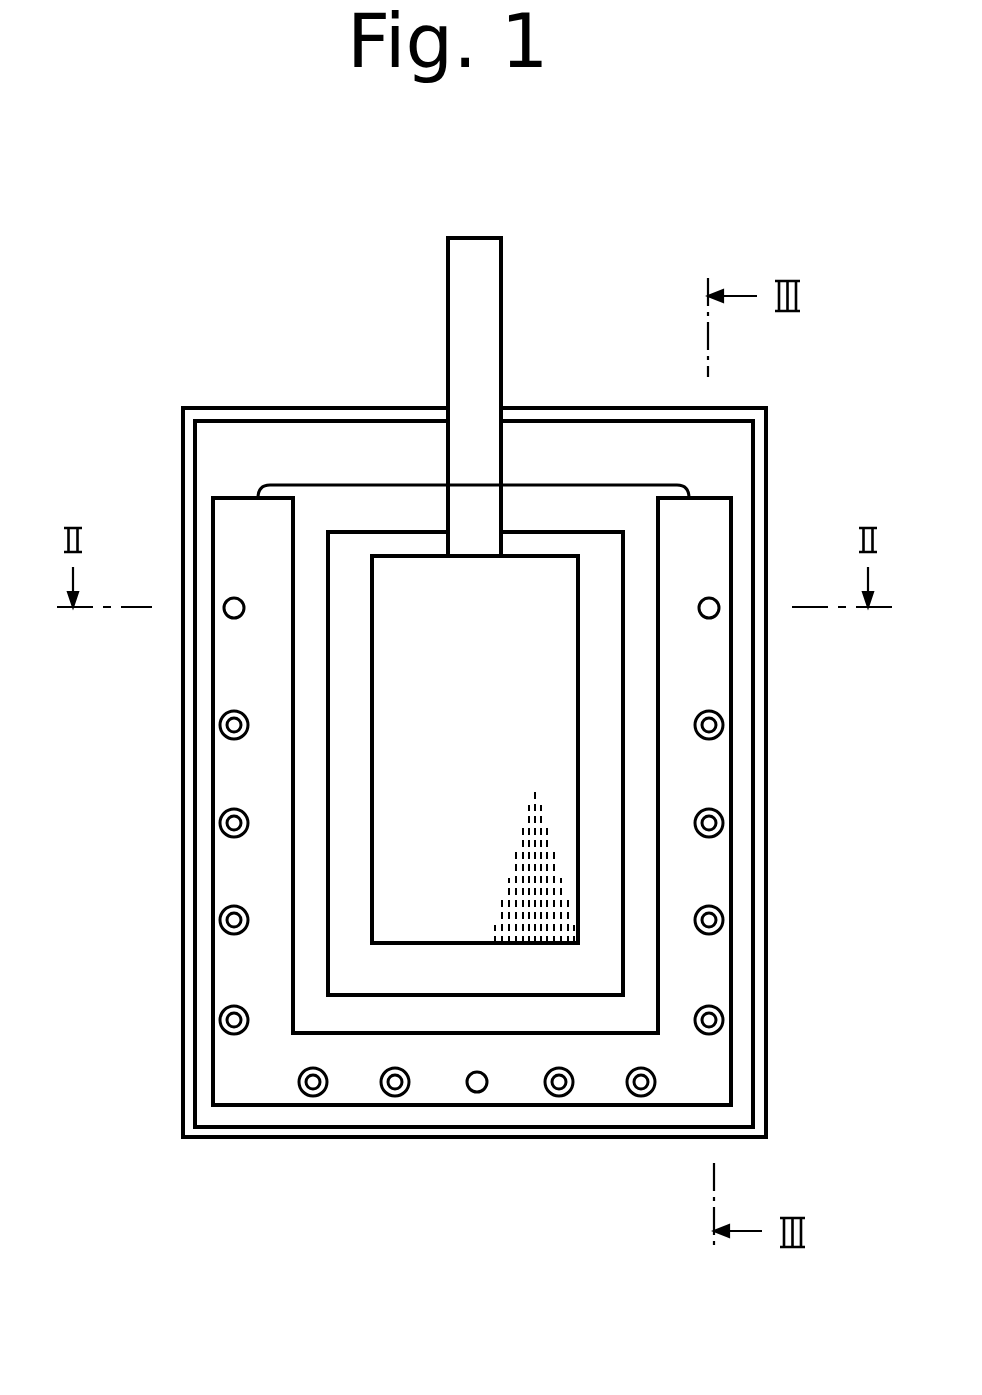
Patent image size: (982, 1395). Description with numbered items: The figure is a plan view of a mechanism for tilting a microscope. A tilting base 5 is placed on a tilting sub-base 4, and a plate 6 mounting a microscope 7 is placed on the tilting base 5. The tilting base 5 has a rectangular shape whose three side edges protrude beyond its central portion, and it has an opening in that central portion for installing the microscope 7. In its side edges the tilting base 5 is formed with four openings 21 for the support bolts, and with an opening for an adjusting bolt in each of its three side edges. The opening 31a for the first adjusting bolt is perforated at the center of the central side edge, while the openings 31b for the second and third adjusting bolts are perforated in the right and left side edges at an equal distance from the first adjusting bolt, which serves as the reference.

The tilting sub-base 4 is at (284, 1113).
The tilting base 5 is at (255, 963).
The plate 6 is at (348, 768).
The microscope 7 is at (415, 838).
The openings for the support bolts 21 is at (724, 918).
The opening for the first adjusting bolt 31a is at (474, 1092).
The openings for the second and third adjusting bolts 31b is at (226, 614).